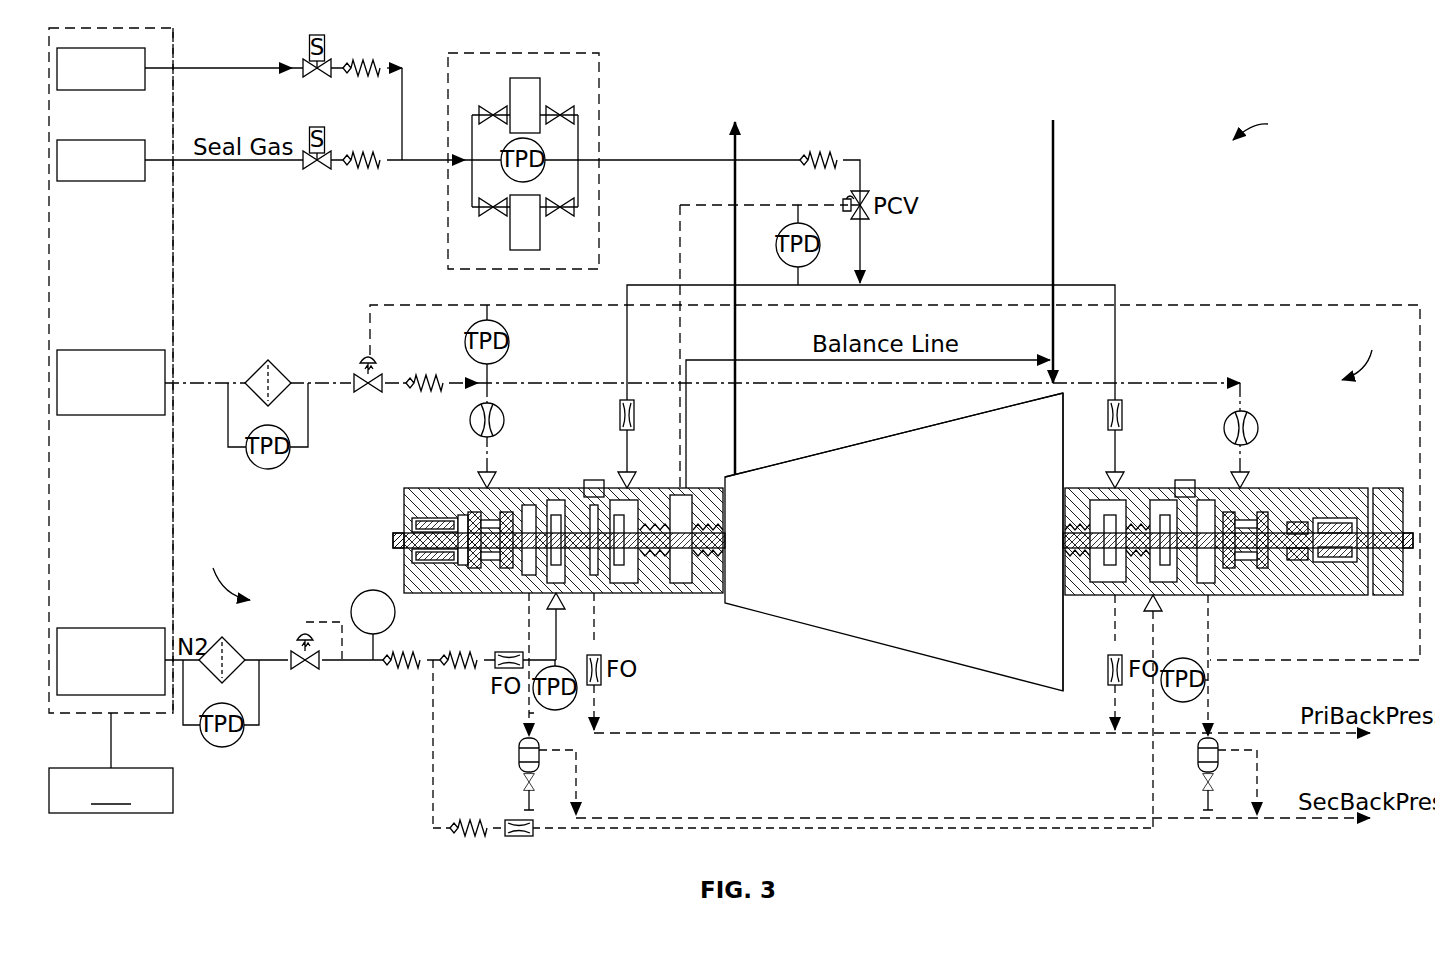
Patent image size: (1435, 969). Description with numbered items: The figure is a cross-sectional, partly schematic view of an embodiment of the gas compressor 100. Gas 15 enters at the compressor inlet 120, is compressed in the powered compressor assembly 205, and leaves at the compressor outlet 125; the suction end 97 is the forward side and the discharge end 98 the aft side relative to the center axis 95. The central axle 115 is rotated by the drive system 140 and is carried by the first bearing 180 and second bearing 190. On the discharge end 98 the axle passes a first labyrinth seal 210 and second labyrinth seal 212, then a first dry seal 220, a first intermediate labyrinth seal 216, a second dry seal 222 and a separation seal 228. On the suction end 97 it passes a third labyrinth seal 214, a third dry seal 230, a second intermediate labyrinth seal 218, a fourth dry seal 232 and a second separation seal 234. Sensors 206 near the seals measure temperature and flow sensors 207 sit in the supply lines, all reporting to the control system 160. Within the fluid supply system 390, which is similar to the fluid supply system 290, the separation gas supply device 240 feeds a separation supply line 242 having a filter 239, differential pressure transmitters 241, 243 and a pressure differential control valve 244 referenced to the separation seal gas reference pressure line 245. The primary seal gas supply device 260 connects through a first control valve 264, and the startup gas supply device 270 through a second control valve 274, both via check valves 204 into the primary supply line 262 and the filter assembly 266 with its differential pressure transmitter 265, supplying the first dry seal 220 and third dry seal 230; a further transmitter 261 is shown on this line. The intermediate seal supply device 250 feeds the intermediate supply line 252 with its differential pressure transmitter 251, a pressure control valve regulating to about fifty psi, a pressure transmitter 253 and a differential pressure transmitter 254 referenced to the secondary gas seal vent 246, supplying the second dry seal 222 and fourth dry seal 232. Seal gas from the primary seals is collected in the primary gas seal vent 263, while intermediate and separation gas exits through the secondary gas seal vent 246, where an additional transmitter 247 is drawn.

The gas compressor 100 is at (1274, 126).
The gas 15 is at (733, 150).
The center axis 95 is at (395, 540).
The suction end 97 is at (1366, 351).
The discharge end 98 is at (225, 568).
The central axle 115 is at (395, 547).
The compressor inlet 120 is at (1057, 402).
The compressor outlet 125 is at (793, 477).
The drive system 140 is at (1390, 490).
The control system 160 is at (111, 763).
The first bearing 180 is at (404, 526).
The second bearing 190 is at (1325, 592).
The check valve 204 is at (378, 58).
The powered compressor assembly 205 is at (874, 607).
The sensor 206 is at (588, 480).
The flow sensor 207 is at (467, 420).
The first labyrinth seal 210 is at (712, 595).
The second labyrinth seal 212 is at (673, 585).
The third labyrinth seal 214 is at (1082, 595).
The first intermediate labyrinth seal 216 is at (576, 594).
The second intermediate labyrinth seal 218 is at (1142, 595).
The first dry seal 220 is at (624, 582).
The second dry seal 222 is at (549, 488).
The separation seal 228 is at (470, 488).
The third dry seal 230 is at (1104, 490).
The fourth dry seal 232 is at (1164, 596).
The second separation seal 234 is at (1257, 592).
The filter 239 is at (254, 368).
The separation gas supply device 240 is at (134, 349).
The differential pressure transmitter 241 is at (512, 342).
The separation supply line 242 is at (554, 384).
The differential pressure transmitter 243 is at (268, 470).
The pressure differential control valve 244 is at (355, 369).
The separation seal gas reference pressure line 245 is at (1298, 305).
The secondary gas seal vent 246 is at (978, 822).
The secondary vent pressure transmitter 247 is at (1200, 703).
The intermediate seal supply device 250 is at (128, 628).
The differential pressure transmitter 251 is at (228, 748).
The intermediate supply line 252 is at (356, 664).
The pressure transmitter 253 is at (395, 616).
The differential pressure transmitter 254 is at (572, 708).
The primary seal gas supply device 260 is at (118, 182).
The seal gas pressure transmitter 261 is at (795, 223).
The primary supply line 262 is at (924, 287).
The primary gas seal vent 263 is at (964, 736).
The first control valve 264 is at (308, 170).
The differential pressure transmitter 265 is at (545, 168).
The filter assembly 266 is at (600, 105).
The startup gas supply device 270 is at (118, 90).
The second control valve 274 is at (308, 78).
The fluid supply system 290 is at (175, 230).
The fluid supply system 390 is at (130, 28).